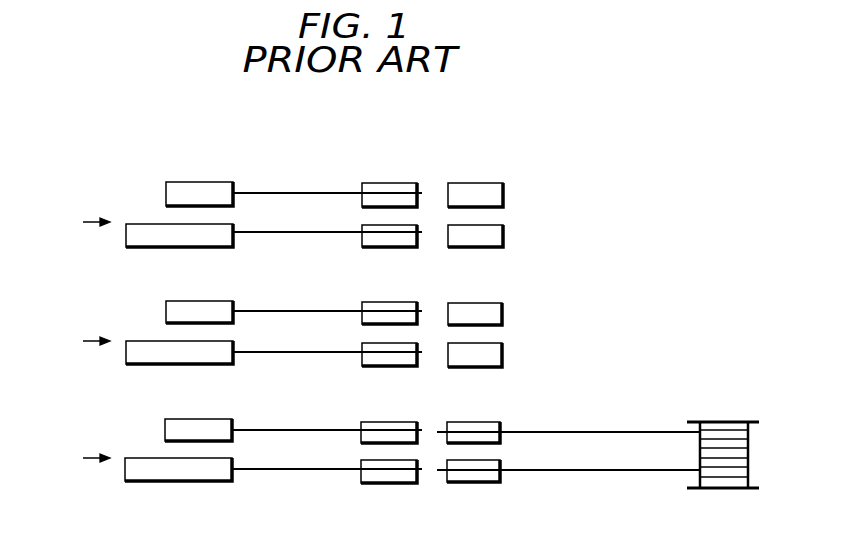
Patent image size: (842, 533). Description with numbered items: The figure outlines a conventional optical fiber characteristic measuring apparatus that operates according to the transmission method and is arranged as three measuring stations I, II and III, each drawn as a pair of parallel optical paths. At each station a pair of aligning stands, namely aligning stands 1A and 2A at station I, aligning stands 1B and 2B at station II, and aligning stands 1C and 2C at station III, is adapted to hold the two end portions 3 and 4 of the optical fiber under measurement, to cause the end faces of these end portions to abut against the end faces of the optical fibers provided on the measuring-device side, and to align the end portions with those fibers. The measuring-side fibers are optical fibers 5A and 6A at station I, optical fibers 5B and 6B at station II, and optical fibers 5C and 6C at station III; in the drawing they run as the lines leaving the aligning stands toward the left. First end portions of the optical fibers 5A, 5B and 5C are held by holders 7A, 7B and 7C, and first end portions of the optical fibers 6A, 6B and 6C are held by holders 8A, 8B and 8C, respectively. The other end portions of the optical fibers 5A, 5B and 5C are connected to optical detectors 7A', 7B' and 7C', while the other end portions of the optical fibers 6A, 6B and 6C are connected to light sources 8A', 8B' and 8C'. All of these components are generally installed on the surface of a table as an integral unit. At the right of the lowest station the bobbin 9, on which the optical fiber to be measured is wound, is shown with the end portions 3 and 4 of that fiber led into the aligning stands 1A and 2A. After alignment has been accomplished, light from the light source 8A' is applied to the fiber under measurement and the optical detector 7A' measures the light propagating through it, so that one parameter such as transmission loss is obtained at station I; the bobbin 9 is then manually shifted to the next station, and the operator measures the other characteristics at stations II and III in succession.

The station I is at (84, 458).
The station II is at (83, 342).
The station III is at (81, 223).
The aligning stand 1A is at (452, 484).
The aligning stand 2A is at (490, 421).
The aligning stand 1B is at (452, 369).
The aligning stand 2B is at (488, 302).
The aligning stand 1C is at (452, 249).
The aligning stand 2C is at (490, 182).
The end portion of optical fiber under measurement 3 is at (596, 472).
The end portion of optical fiber under measurement 4 is at (613, 431).
The optical fiber 5A is at (310, 471).
The optical fiber 6A is at (304, 429).
The optical fiber 5B is at (335, 354).
The optical fiber 6B is at (336, 310).
The optical fiber 5C is at (313, 234).
The optical fiber 6C is at (307, 191).
The holder 7A is at (388, 490).
The holder 8A is at (393, 417).
The holder 7B is at (388, 370).
The holder 8B is at (393, 297).
The holder 7C is at (388, 252).
The holder 8C is at (392, 176).
The optical detector 7A' is at (177, 486).
The light source 8A' is at (206, 412).
The optical detector 7B' is at (178, 369).
The light source 8B' is at (207, 294).
The optical detector 7C' is at (177, 250).
The light source 8C' is at (207, 175).
The bobbin 9 is at (749, 456).